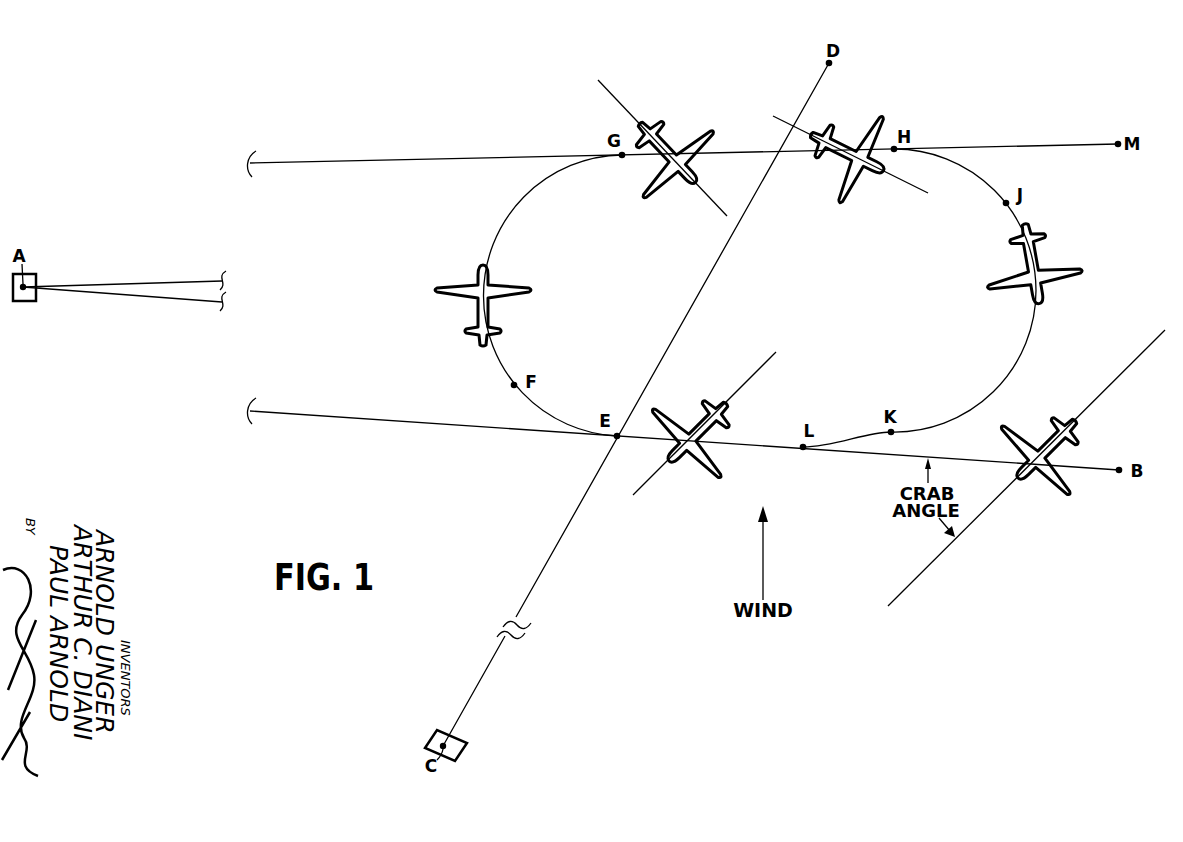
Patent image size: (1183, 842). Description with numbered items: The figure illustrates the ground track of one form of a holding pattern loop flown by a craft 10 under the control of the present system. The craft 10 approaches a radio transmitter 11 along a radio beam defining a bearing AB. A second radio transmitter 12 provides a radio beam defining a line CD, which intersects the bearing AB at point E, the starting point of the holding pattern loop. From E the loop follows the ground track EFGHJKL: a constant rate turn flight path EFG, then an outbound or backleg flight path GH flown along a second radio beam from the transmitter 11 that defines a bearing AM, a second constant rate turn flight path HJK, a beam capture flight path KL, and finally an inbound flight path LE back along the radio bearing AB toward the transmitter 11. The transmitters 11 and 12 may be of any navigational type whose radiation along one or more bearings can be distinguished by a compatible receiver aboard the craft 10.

The craft 10 is at (718, 430).
The radio transmitter 11 is at (23, 302).
The second radio transmitter 12 is at (466, 752).